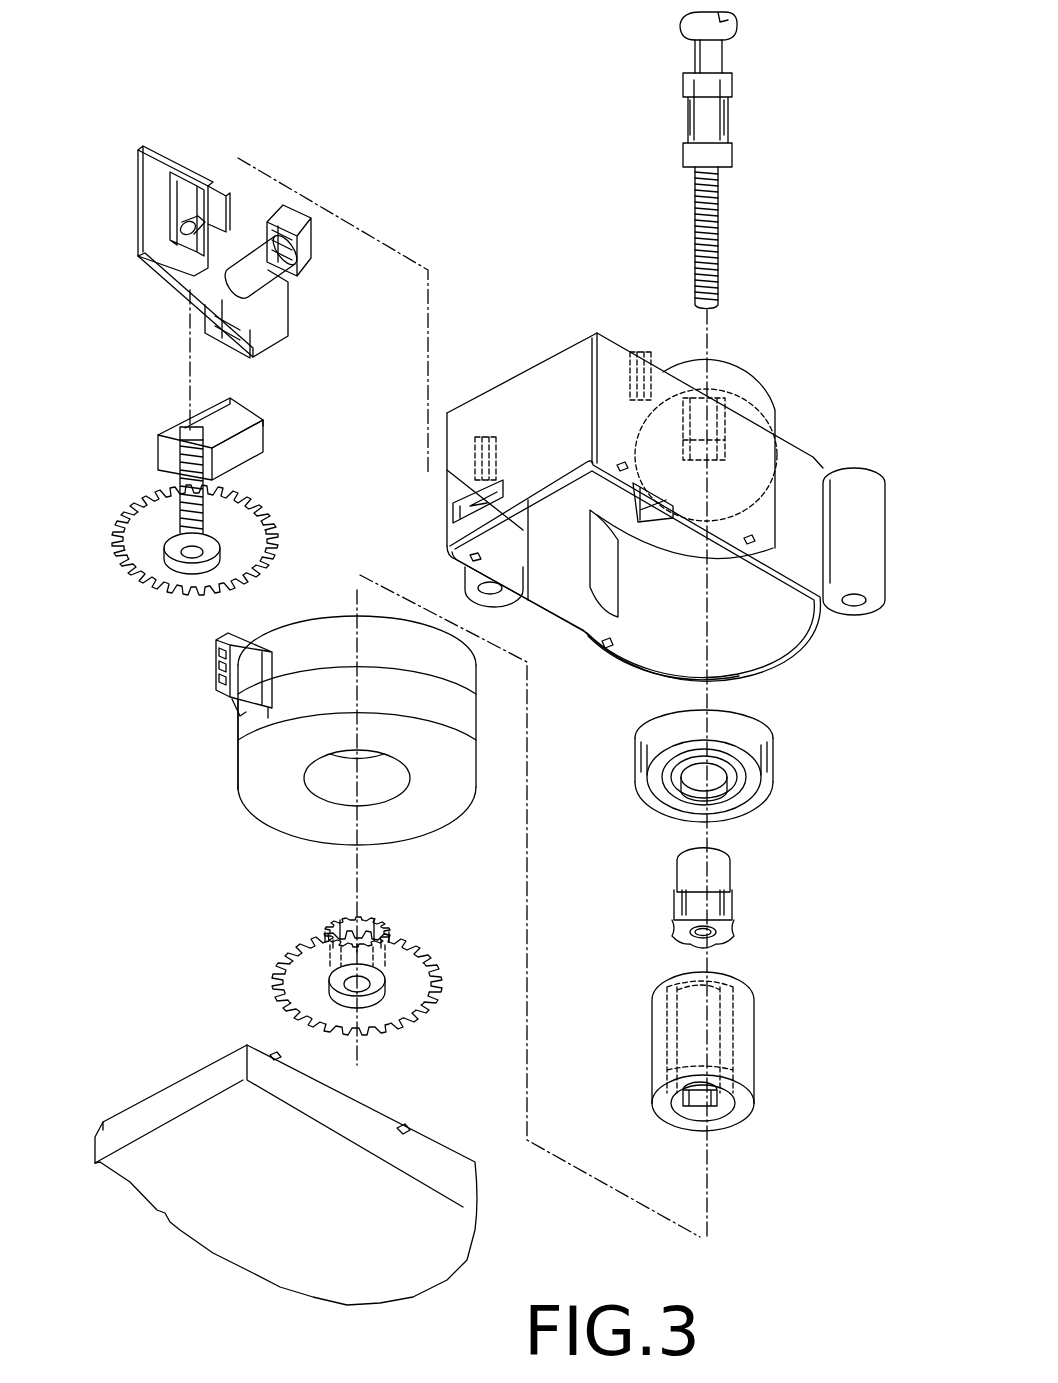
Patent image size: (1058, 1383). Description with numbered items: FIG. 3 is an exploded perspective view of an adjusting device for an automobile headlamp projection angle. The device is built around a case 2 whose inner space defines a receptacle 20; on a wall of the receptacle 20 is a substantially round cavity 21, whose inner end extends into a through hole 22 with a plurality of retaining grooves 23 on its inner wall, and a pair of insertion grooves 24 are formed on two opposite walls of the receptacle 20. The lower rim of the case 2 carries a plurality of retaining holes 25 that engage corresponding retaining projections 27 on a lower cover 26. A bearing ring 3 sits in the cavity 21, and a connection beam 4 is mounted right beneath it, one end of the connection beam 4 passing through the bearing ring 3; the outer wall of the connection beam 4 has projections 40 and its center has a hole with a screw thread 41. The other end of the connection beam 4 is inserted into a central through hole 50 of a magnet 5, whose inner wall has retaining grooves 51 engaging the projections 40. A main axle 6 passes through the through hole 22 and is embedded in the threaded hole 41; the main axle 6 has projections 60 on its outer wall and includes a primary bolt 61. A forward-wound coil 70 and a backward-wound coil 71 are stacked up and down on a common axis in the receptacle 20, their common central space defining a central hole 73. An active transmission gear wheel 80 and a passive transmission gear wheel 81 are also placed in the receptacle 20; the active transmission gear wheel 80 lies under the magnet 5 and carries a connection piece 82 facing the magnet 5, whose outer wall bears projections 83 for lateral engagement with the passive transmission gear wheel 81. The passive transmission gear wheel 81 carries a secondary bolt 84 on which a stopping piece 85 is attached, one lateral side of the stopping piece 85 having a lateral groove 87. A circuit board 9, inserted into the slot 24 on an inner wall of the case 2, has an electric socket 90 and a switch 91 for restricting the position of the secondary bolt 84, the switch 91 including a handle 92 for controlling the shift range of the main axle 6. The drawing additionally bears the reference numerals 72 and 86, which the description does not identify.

The case 2 is at (530, 362).
The bearing ring 3 is at (766, 760).
The connection beam 4 is at (712, 869).
The magnet 5 is at (750, 1035).
The main axle 6 is at (722, 62).
The circuit board 9 is at (168, 264).
The receptacle 20 is at (765, 634).
The cavity 21 is at (800, 457).
The through hole 22 is at (745, 368).
The retaining grooves 23 is at (752, 396).
The insertion grooves 24 is at (481, 430).
The retaining holes 25 is at (606, 650).
The lower cover 26 is at (430, 1195).
The retaining projections 27 is at (405, 1128).
The projections 40 is at (732, 908).
The hole with a screw thread 41 is at (708, 940).
The central through hole 50 is at (712, 1120).
The retaining grooves 51 is at (718, 1103).
The projections 60 is at (733, 130).
The primary bolt 61 is at (720, 231).
The forward-wound coil 70 is at (316, 640).
The backward-wound coil 71 is at (242, 768).
The connector 72 is at (230, 700).
The central hole 73 is at (330, 780).
The active transmission gear wheel 80 is at (395, 1012).
The passive transmission gear wheel 81 is at (160, 580).
The connection piece 82 is at (365, 916).
The projections 83 is at (390, 918).
The secondary bolt 84 is at (180, 490).
The stopping piece 85 is at (245, 458).
The block upper portion 86 is at (185, 440).
The lateral groove 87 is at (240, 415).
The electric socket 90 is at (308, 250).
The switch 91 is at (150, 190).
The handle 92 is at (186, 224).